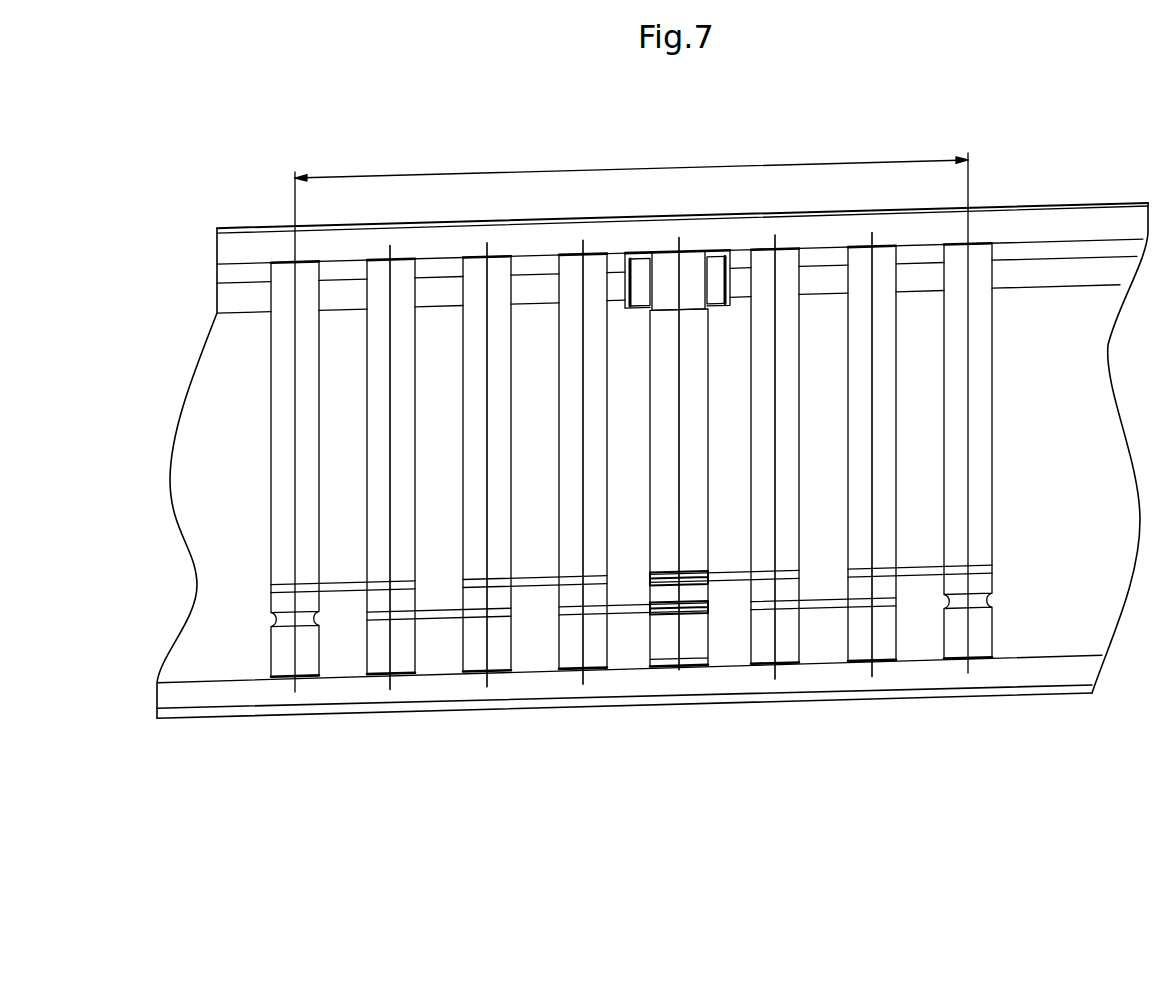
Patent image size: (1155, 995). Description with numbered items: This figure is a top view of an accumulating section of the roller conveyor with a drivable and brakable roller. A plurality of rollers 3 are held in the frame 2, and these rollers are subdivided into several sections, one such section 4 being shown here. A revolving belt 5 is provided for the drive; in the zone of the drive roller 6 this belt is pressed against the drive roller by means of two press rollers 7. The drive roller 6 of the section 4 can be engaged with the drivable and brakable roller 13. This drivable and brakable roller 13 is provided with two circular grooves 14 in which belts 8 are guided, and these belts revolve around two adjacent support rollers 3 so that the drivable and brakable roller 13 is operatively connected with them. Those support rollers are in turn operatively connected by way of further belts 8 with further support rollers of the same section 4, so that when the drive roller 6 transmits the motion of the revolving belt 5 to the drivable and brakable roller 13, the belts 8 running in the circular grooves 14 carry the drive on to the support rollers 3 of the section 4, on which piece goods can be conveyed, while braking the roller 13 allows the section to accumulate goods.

The frame 2 is at (1030, 225).
The rollers 3 is at (798, 366).
The section 4 is at (597, 170).
The revolving belt 5 is at (437, 290).
The drive roller 6 is at (687, 278).
The press rollers 7 is at (643, 277).
The belts 8 is at (625, 613).
The drivable and brakable roller 13 is at (690, 543).
The circular grooves 14 is at (657, 606).